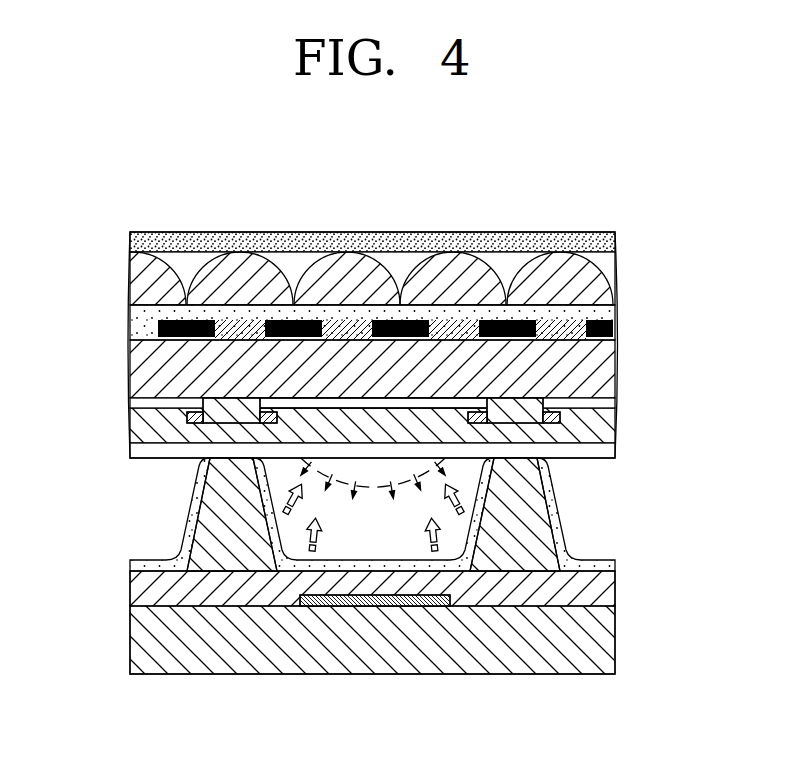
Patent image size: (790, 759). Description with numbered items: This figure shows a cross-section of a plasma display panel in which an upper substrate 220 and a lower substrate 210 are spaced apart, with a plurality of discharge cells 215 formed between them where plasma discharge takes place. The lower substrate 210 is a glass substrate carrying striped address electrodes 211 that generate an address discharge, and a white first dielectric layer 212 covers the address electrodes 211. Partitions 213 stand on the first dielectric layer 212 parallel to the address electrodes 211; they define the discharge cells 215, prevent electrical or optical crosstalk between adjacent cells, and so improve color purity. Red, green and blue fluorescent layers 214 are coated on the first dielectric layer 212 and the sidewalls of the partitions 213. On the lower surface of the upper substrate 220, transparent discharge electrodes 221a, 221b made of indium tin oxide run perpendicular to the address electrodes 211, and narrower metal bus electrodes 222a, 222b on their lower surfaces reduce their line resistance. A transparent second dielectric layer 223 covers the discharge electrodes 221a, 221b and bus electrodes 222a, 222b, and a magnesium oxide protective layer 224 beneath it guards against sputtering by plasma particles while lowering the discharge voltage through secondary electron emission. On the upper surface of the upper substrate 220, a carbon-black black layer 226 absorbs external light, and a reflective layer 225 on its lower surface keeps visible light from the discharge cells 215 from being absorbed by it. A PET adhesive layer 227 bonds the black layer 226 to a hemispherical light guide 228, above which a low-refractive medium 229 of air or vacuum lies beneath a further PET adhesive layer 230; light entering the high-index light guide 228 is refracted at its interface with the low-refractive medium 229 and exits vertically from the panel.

The lower substrate 210 is at (603, 643).
The address electrodes 211 is at (345, 607).
The first dielectric layer 212 is at (603, 586).
The partitions 213 is at (535, 538).
The fluorescent layers 214 is at (553, 500).
The discharge cells 215 is at (373, 504).
The upper substrate 220 is at (598, 366).
The discharge electrode 221a is at (276, 403).
The discharge electrode 221b is at (202, 402).
The bus electrode 222a is at (258, 402).
The bus electrode 222b is at (187, 417).
The second dielectric layer 223 is at (612, 424).
The protective layer 224 is at (617, 452).
The reflective layer 225 is at (160, 320).
The black layer 226 is at (157, 336).
The adhesive layer 227 is at (608, 314).
The light guide 228 is at (604, 286).
The low-refractive medium 229 is at (513, 259).
The adhesive layer 230 is at (503, 241).